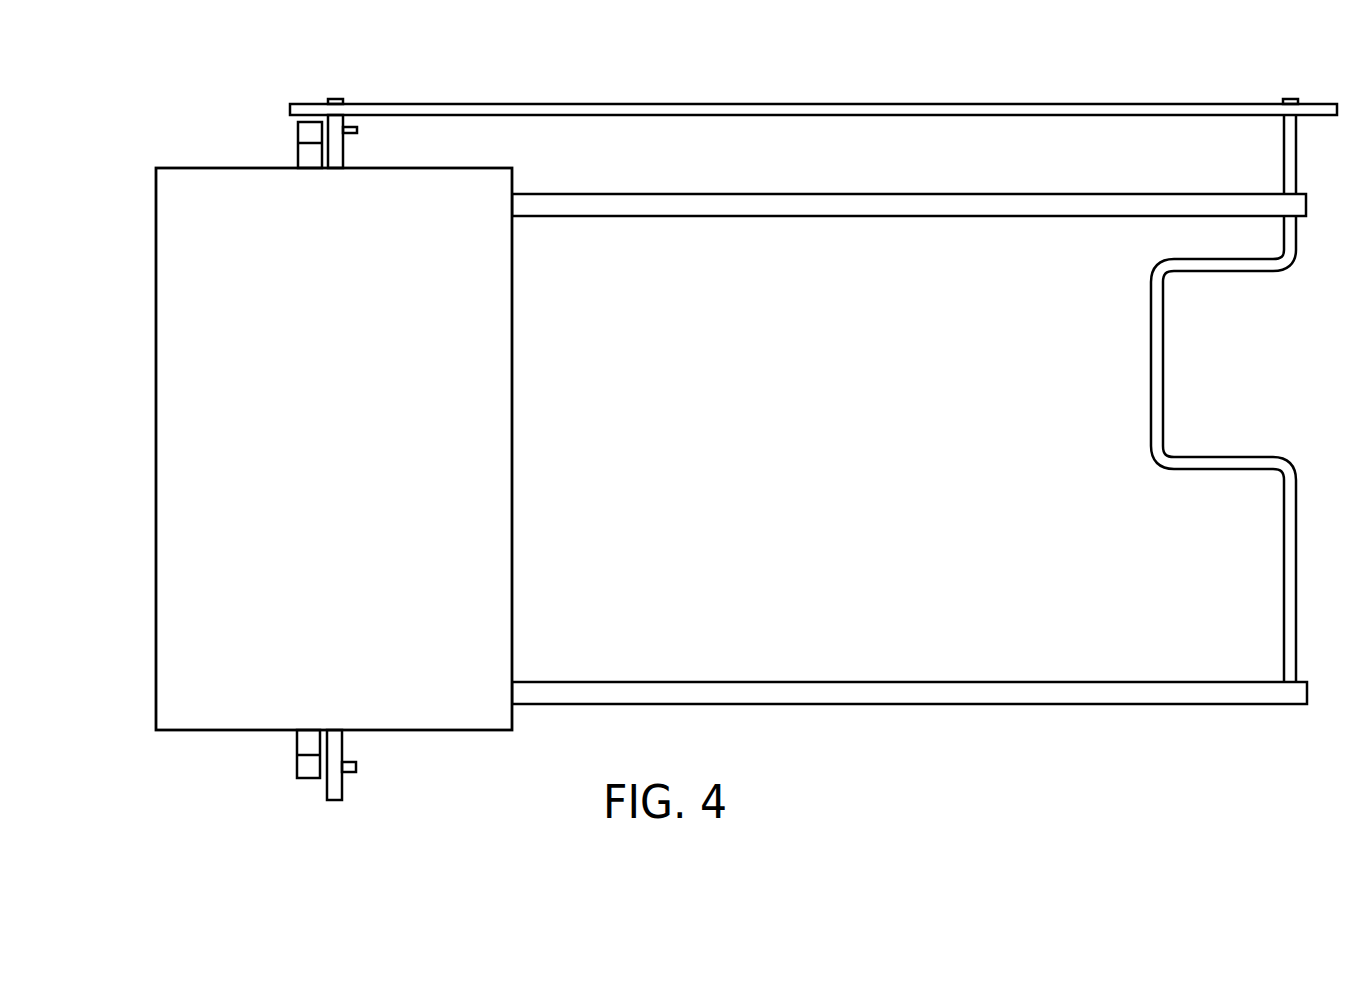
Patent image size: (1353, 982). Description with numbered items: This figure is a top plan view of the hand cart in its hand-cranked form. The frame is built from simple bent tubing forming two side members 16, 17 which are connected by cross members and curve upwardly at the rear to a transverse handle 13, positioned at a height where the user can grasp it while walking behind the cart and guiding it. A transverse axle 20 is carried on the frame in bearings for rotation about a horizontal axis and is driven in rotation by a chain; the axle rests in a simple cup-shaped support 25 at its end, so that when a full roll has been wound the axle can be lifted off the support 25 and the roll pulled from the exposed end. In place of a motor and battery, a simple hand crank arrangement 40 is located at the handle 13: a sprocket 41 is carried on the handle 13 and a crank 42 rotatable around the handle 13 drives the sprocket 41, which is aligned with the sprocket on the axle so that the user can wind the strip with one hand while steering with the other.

The transverse handle 13 is at (1285, 598).
The side member 16 is at (298, 135).
The side member 17 is at (297, 768).
The transverse axle 20 is at (336, 99).
The support 25 is at (357, 133).
The hand crank arrangement 40 is at (1101, 398).
The sprocket 41 is at (1253, 103).
The crank 42 is at (1150, 368).